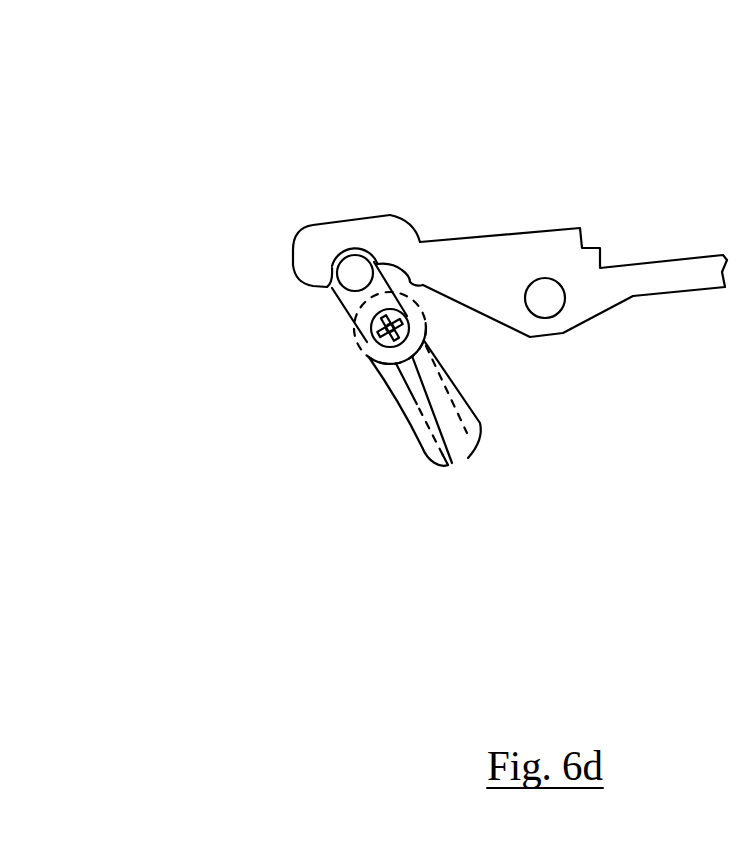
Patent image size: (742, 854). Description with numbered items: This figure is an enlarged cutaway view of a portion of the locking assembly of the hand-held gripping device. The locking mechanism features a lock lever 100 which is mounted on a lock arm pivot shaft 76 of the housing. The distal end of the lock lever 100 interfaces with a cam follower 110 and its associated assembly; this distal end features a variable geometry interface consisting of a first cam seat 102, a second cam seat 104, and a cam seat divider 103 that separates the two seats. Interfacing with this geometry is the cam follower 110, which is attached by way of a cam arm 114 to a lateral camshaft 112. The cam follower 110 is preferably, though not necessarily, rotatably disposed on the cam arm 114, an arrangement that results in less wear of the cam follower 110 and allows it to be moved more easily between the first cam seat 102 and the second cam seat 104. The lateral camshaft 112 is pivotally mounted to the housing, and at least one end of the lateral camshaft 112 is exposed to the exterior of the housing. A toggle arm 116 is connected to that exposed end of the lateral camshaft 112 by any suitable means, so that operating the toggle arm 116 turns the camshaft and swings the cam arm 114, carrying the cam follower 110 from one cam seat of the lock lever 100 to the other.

The lock arm pivot shaft 76 is at (620, 405).
The lock lever 100 is at (620, 112).
The first cam seat 102 is at (508, 140).
The cam seat divider 103 is at (455, 110).
The second cam seat 104 is at (347, 247).
The cam follower 110 is at (333, 296).
The lateral camshaft 112 is at (292, 506).
The cam arm 114 is at (210, 440).
The toggle arm 116 is at (614, 496).